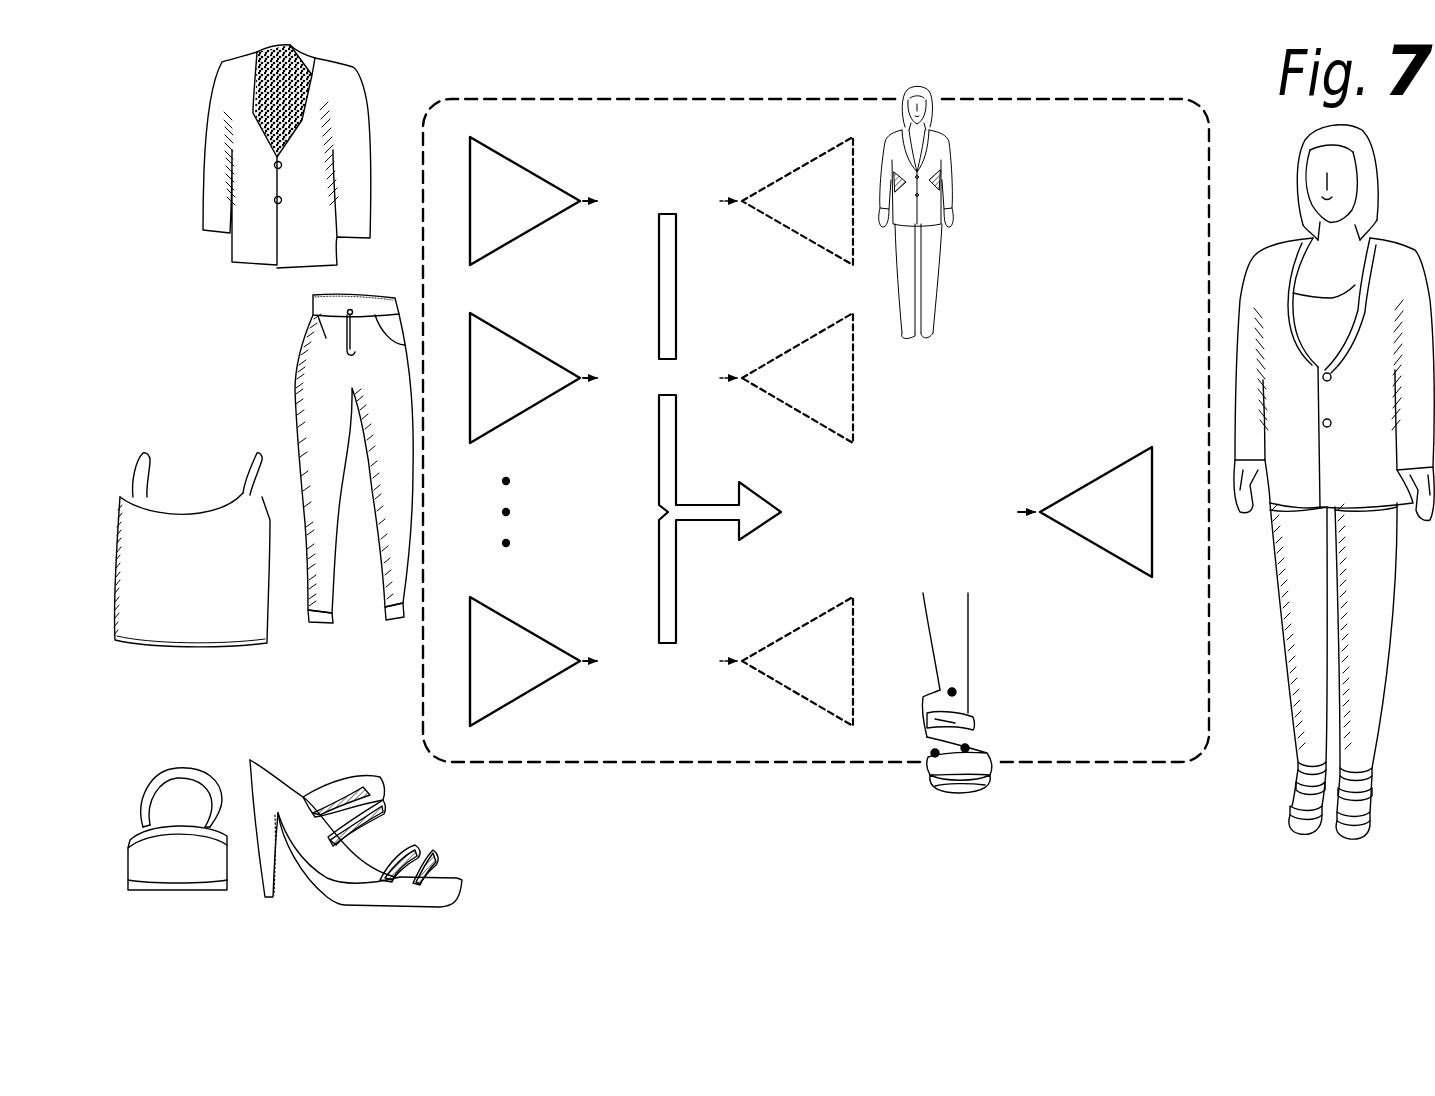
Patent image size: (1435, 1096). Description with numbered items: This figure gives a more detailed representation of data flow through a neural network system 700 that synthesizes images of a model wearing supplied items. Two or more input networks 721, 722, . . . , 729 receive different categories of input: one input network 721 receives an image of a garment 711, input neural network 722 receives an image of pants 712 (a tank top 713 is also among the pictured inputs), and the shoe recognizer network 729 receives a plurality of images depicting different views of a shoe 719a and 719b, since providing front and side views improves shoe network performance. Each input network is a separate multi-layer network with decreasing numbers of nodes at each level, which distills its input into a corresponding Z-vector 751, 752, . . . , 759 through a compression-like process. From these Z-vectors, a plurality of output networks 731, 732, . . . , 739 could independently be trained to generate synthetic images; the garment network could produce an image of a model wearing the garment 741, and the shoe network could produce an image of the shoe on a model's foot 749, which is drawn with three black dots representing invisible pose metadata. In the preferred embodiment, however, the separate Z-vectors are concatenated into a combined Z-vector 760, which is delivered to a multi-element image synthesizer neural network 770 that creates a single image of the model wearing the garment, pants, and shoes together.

The garment embedding and combination system 700 is at (1143, 721).
The garment 711 is at (203, 70).
The pants 712 is at (280, 333).
The tank top image 713 is at (237, 633).
The shoe 719a is at (162, 757).
The shoe 719b is at (455, 855).
The input network 721 is at (562, 166).
The input neural network 722 is at (562, 343).
The input network 729 is at (562, 626).
The output network 731 is at (770, 172).
The output network 732 is at (770, 350).
The output network 739 is at (770, 633).
The decoded body wearing blazer 741 is at (952, 142).
The model's foot 749 is at (993, 692).
The Z-vector 751 is at (625, 216).
The Z-vector 752 is at (625, 393).
The Z-vector 759 is at (625, 676).
The combined Z-vector 760 is at (950, 527).
The multi-element image synthesizer neural network 770 is at (1070, 485).